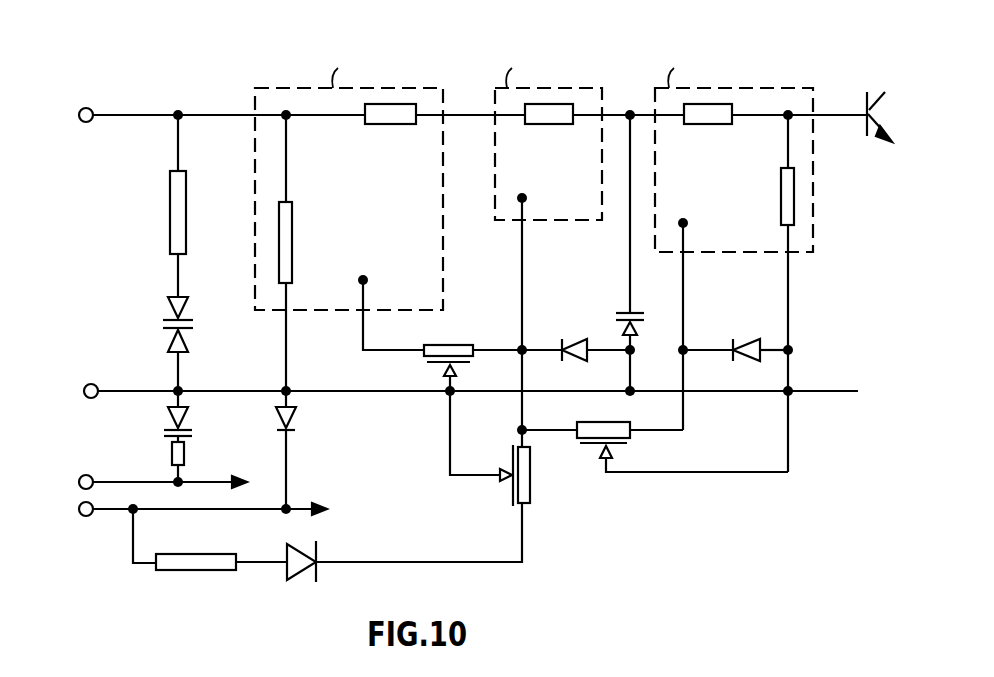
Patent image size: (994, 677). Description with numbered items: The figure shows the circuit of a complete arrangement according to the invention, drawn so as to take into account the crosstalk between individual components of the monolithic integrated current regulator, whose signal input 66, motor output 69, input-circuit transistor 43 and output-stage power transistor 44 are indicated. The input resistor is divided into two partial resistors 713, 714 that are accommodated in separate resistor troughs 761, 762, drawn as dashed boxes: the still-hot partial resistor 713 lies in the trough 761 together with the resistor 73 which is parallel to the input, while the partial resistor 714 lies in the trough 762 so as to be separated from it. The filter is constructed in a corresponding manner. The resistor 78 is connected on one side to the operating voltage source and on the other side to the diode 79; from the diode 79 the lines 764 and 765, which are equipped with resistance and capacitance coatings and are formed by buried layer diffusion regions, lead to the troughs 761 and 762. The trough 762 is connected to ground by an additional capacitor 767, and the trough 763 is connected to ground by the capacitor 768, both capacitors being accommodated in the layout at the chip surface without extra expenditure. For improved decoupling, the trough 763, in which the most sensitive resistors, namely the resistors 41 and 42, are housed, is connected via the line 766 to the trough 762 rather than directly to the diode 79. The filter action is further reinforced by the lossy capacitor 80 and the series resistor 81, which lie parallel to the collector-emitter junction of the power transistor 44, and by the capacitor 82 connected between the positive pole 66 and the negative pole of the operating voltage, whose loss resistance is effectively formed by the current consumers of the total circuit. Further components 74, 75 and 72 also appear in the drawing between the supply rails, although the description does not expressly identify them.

The signal input 66 is at (92, 122).
The motor output 69 is at (100, 476).
The power transistor 44 is at (254, 485).
The resistor 74 is at (170, 213).
The diac 75 is at (168, 318).
The lossy capacitor 80 is at (188, 424).
The series resistor 81 is at (184, 452).
The resistor parallel to the input 73 is at (294, 240).
The capacitor 82 is at (296, 424).
The resistor 78 is at (201, 574).
The diode 79 is at (305, 548).
The resistor trough 761 is at (410, 231).
The resistor trough 762 is at (583, 203).
The trough 763 is at (721, 197).
The partial resistor 713 is at (406, 126).
The partial resistor 714 is at (558, 126).
The resistor 41 is at (726, 126).
The resistor 42 is at (781, 196).
The transistor 43 is at (866, 100).
The capacitor 72 is at (622, 312).
The line 764 is at (458, 342).
The additional capacitor 767 is at (592, 368).
The capacitor 768 is at (748, 360).
The line 766 is at (582, 422).
The line 765 is at (514, 500).